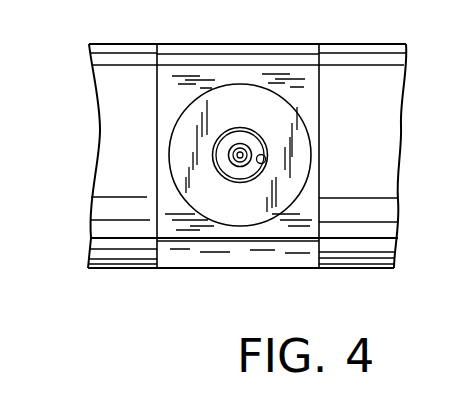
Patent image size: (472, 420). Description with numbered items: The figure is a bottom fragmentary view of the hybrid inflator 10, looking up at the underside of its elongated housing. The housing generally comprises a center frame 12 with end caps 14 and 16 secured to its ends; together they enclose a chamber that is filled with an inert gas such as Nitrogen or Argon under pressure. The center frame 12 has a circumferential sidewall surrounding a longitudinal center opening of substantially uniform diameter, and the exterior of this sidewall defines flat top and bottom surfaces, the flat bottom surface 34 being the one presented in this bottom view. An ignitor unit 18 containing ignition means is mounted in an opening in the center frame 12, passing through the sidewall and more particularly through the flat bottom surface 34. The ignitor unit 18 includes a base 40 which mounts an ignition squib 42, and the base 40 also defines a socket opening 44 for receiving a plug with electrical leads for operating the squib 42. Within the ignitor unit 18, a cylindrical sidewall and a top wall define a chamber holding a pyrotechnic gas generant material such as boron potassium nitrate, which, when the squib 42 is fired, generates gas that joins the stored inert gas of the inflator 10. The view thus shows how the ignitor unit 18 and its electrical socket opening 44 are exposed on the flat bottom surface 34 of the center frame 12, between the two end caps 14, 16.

The hybrid inflator 10 is at (351, 40).
The center frame 12 is at (169, 269).
The end cap 14 is at (118, 141).
The end cap 16 is at (388, 184).
The ignitor unit 18 is at (237, 221).
The flat bottom surface 34 is at (305, 212).
The base 40 is at (212, 198).
The ignition squib 42 is at (250, 145).
The socket opening 44 is at (267, 160).